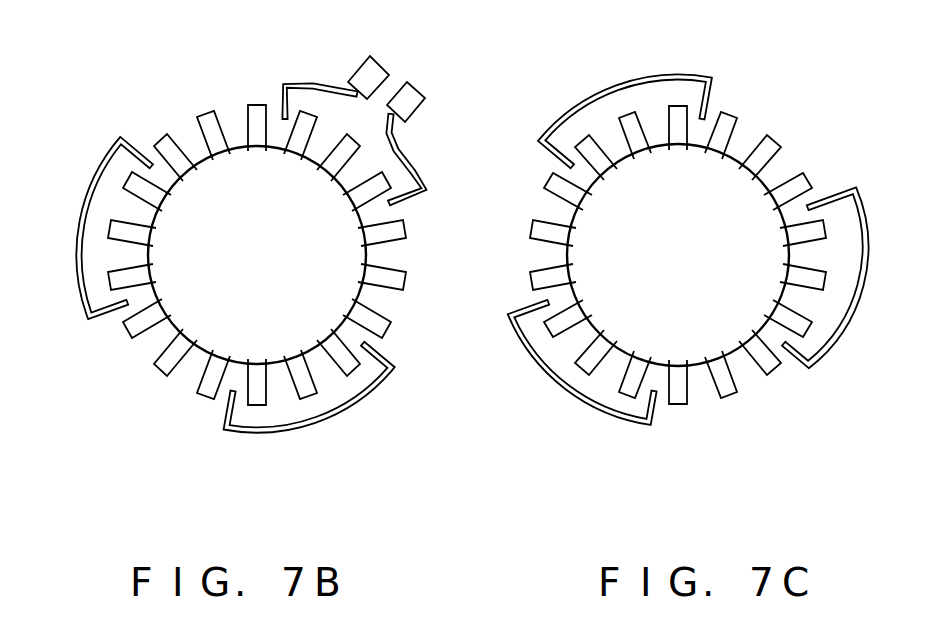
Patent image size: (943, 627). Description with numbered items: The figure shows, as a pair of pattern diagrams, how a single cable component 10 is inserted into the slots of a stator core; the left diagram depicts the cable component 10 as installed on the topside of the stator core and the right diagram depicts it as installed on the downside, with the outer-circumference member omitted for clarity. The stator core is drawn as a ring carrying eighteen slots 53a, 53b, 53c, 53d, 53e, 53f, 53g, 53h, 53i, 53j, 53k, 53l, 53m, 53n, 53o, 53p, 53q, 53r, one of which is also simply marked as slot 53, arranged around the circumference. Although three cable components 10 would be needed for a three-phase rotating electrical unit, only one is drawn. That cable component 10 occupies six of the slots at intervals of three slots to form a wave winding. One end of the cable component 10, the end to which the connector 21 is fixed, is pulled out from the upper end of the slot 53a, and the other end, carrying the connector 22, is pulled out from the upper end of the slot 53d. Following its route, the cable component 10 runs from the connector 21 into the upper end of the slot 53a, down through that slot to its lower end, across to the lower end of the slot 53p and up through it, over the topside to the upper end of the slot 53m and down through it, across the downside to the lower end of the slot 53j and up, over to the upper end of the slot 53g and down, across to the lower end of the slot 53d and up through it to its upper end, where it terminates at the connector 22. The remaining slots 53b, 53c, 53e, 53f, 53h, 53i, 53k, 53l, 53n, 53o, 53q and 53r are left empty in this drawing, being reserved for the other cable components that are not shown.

In FIG. 7B, the cable component 10 is at (78, 206).
In FIG. 7C, the cable component 10 is at (613, 93).
In FIG. 7B, the connector 21 is at (356, 72).
In FIG. 7B, the connector 22 is at (426, 106).
In FIG. 7C, the slot 53 is at (772, 325).
In FIG. 7B, the slot 53a is at (256, 152).
In FIG. 7C, the slot 53a is at (694, 150).
In FIG. 7B, the slot 53b is at (313, 161).
In FIG. 7C, the slot 53b is at (772, 130).
In FIG. 7B, the slot 53c is at (347, 194).
In FIG. 7C, the slot 53c is at (802, 156).
In FIG. 7B, the slot 53d is at (364, 223).
In FIG. 7C, the slot 53d is at (783, 218).
In FIG. 7B, the slot 53e is at (399, 253).
In FIG. 7C, the slot 53e is at (788, 248).
In FIG. 7B, the slot 53f is at (389, 300).
In FIG. 7C, the slot 53f is at (783, 294).
In FIG. 7B, the slot 53g is at (343, 321).
In FIG. 7B, the slot 53h is at (315, 345).
In FIG. 7C, the slot 53h is at (757, 376).
In FIG. 7B, the slot 53i is at (280, 348).
In FIG. 7C, the slot 53i is at (702, 387).
In FIG. 7B, the slot 53j is at (238, 363).
In FIG. 7C, the slot 53j is at (663, 365).
In FIG. 7B, the slot 53k is at (187, 383).
In FIG. 7C, the slot 53k is at (618, 350).
In FIG. 7B, the slot 53l is at (150, 348).
In FIG. 7C, the slot 53l is at (590, 323).
In FIG. 7B, the slot 53m is at (146, 291).
In FIG. 7C, the slot 53m is at (572, 293).
In FIG. 7B, the slot 53n is at (150, 262).
In FIG. 7C, the slot 53n is at (535, 256).
In FIG. 7B, the slot 53o is at (150, 228).
In FIG. 7C, the slot 53o is at (540, 210).
In FIG. 7B, the slot 53p is at (174, 181).
In FIG. 7C, the slot 53p is at (583, 181).
In FIG. 7B, the slot 53q is at (182, 128).
In FIG. 7C, the slot 53q is at (618, 153).
In FIG. 7B, the slot 53r is at (236, 108).
In FIG. 7C, the slot 53r is at (657, 148).